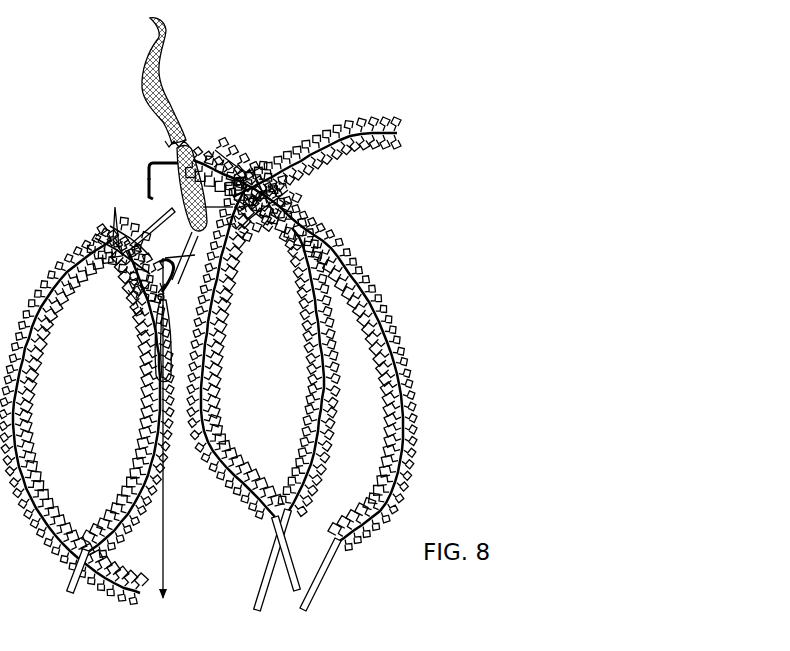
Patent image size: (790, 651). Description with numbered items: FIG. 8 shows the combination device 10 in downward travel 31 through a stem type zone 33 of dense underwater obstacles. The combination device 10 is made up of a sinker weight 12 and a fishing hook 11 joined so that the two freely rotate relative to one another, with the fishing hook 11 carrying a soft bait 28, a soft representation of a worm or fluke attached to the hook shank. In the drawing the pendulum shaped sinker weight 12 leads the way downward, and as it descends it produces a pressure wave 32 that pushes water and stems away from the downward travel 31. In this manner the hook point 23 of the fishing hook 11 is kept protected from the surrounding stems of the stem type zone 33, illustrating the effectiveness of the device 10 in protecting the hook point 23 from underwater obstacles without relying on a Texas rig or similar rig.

The combination device 10 is at (155, 261).
The fishing hook 11 is at (153, 162).
The sinker weight 12 is at (168, 362).
The hook point 23 is at (148, 197).
The soft bait 28 is at (168, 117).
The downward travel 31 is at (183, 428).
The pressure wave 32 is at (165, 378).
The stem type zone 33 is at (420, 362).